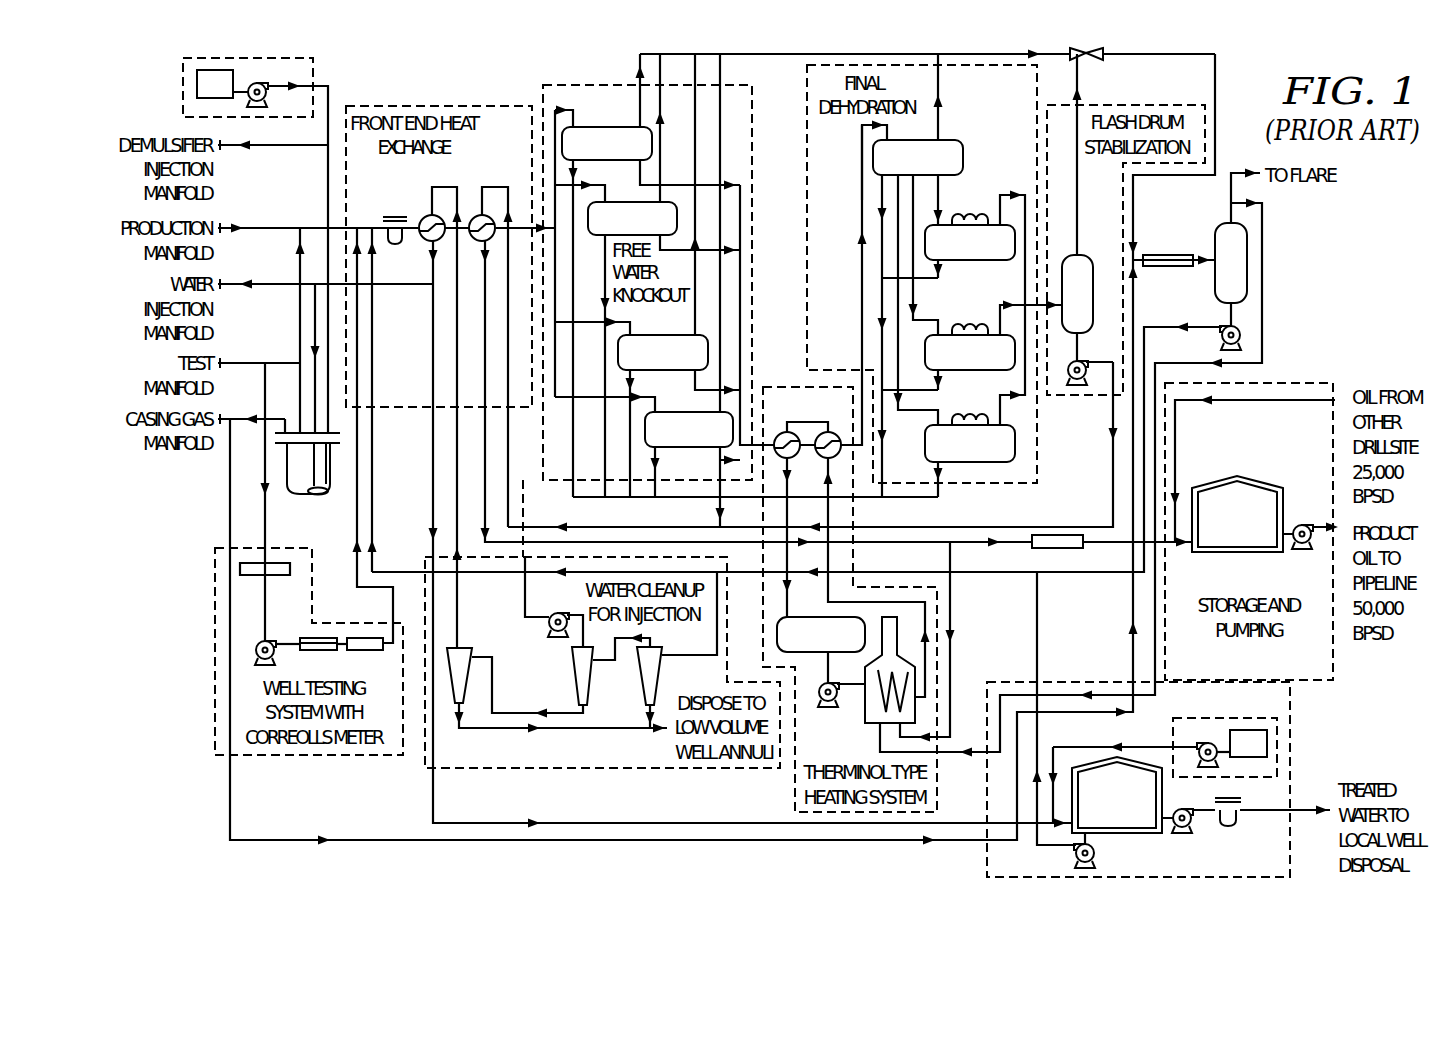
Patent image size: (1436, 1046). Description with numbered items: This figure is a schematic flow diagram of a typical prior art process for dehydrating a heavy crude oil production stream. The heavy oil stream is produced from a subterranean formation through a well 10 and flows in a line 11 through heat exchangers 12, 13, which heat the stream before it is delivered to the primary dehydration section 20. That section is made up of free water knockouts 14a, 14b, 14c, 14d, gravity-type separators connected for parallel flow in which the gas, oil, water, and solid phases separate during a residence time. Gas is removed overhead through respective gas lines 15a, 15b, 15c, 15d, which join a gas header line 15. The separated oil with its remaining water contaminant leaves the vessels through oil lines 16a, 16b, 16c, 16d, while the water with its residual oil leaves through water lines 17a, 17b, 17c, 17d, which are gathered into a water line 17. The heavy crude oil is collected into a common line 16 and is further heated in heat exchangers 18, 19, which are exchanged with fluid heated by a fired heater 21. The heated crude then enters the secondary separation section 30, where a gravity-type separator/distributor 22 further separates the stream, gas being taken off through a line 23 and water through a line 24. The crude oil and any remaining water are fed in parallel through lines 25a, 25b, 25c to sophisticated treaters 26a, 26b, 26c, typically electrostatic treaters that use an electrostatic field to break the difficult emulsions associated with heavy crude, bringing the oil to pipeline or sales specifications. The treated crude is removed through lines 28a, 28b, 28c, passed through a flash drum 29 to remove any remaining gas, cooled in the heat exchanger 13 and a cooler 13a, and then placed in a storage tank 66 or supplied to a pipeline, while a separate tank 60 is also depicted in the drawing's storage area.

The well 10 is at (326, 492).
The line 11 is at (272, 226).
The heat exchanger 12 is at (420, 216).
The heat exchanger 13 is at (477, 214).
The cooler 13a is at (1058, 535).
The free water knockout 14a is at (607, 143).
The free water knockout 14b is at (632, 218).
The free water knockout 14c is at (663, 352).
The free water knockout 14d is at (689, 429).
The gas header line 15 is at (1215, 55).
The gas line 15a is at (636, 75).
The gas line 15b is at (660, 101).
The gas line 15c is at (695, 97).
The gas line 15d is at (720, 72).
The common line 16 is at (862, 294).
The oil line 16a is at (740, 180).
The oil outlet line 16b is at (740, 248).
The oil outlet line 16c is at (740, 382).
The oil outlet line 16d is at (740, 487).
The water line 17 is at (718, 625).
The water line 17a is at (573, 480).
The water outlet line 17b is at (605, 487).
The water outlet line 17c is at (640, 496).
The water outlet line 17d is at (660, 455).
The heat exchanger 18 is at (786, 426).
The heat exchanger 19 is at (830, 426).
The primary dehydration section 20 is at (537, 86).
The fired heater 21 is at (868, 718).
The separator/distributor 22 is at (918, 157).
The gas line 23 is at (939, 118).
The water line 24 is at (862, 193).
The line 25a is at (938, 202).
The line 25b is at (928, 315).
The line 25c is at (927, 404).
The treater 26a is at (970, 237).
The treater 26b is at (970, 347).
The treater 26c is at (970, 438).
The line 28a is at (1022, 192).
The line 28b is at (1018, 300).
The line 28c is at (1028, 415).
The flash drum 29 is at (1080, 254).
The secondary separation section 30 is at (1014, 83).
The treated water storage tank 60 is at (1117, 795).
The storage tank 66 is at (1237, 514).